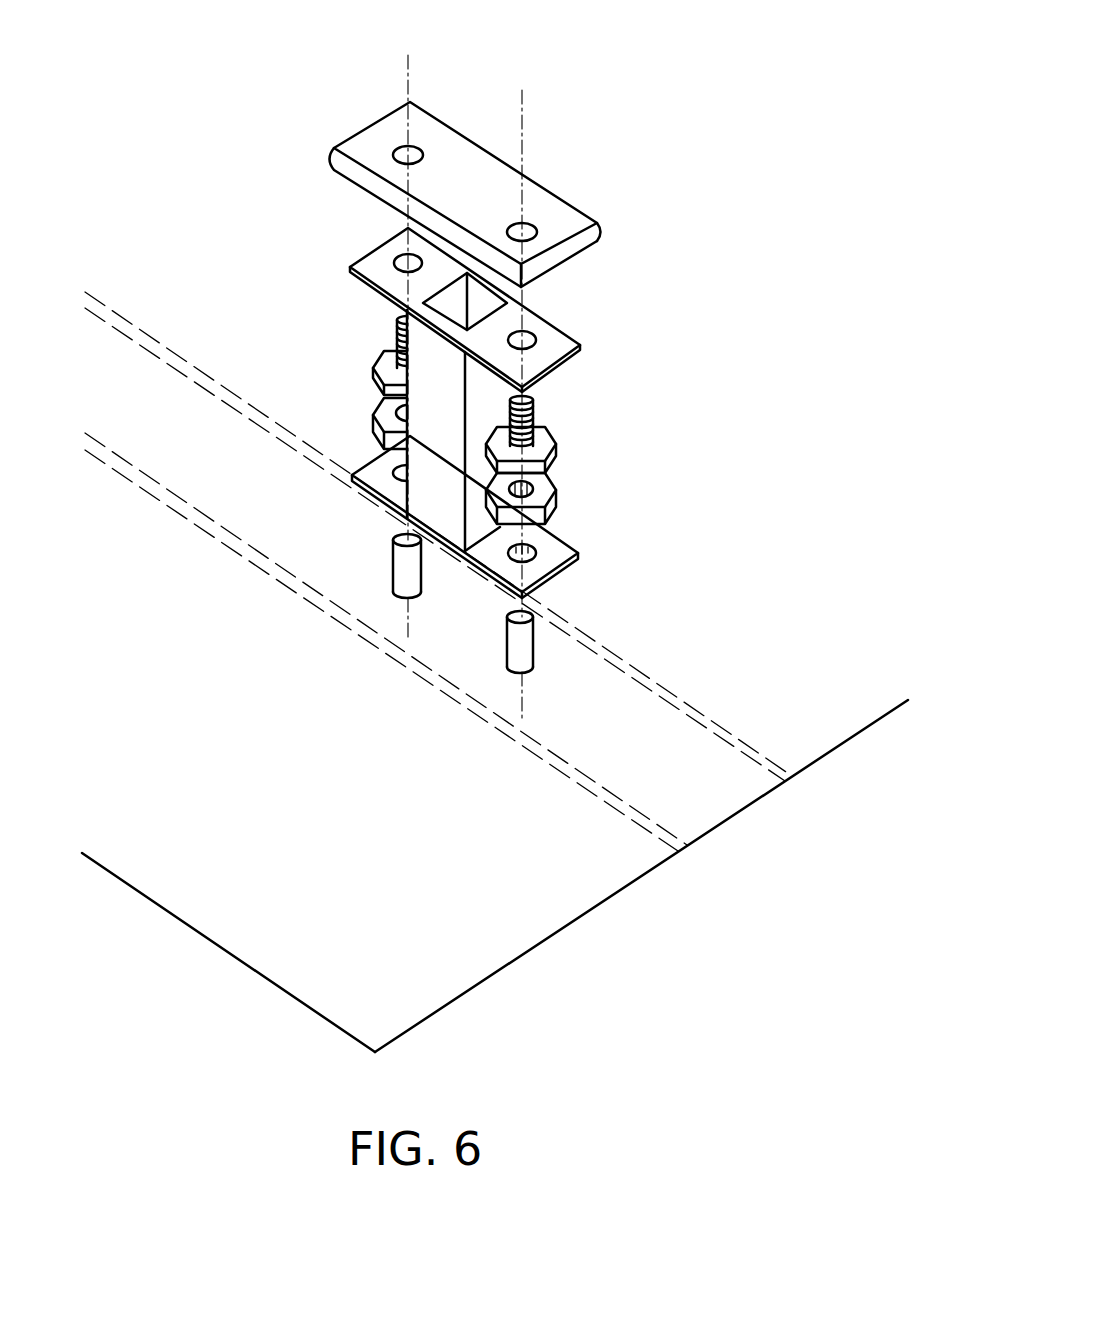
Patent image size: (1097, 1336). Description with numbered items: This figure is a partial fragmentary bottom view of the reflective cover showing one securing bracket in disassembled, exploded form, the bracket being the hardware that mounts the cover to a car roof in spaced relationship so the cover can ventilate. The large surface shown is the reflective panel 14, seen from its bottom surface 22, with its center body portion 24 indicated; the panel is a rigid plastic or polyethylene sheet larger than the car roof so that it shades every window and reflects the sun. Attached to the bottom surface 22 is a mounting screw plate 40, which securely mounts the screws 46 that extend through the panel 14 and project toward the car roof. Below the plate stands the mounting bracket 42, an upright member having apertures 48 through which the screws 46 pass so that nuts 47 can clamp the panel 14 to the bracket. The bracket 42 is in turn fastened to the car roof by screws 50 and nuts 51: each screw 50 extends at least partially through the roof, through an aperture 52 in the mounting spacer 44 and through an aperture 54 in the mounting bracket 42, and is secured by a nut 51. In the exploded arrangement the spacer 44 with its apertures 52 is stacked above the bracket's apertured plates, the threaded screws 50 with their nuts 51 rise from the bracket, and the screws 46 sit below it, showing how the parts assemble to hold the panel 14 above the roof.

The reflective panel 14 is at (609, 893).
The bottom surface 22 is at (880, 562).
The center body portion 24 is at (758, 683).
The mounting screw plate 40 is at (712, 782).
The mounting bracket 42 is at (466, 397).
The mounting spacer 44 is at (447, 124).
The screw 46 is at (394, 582).
The nut 47 is at (373, 420).
The aperture 48 is at (393, 472).
The screw 50 is at (395, 337).
The nut 51 is at (373, 368).
The aperture 52 is at (397, 150).
The aperture 54 is at (397, 262).